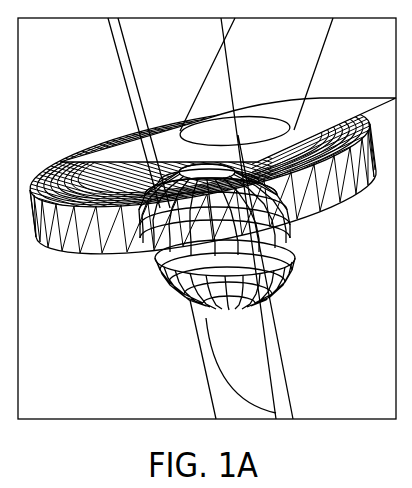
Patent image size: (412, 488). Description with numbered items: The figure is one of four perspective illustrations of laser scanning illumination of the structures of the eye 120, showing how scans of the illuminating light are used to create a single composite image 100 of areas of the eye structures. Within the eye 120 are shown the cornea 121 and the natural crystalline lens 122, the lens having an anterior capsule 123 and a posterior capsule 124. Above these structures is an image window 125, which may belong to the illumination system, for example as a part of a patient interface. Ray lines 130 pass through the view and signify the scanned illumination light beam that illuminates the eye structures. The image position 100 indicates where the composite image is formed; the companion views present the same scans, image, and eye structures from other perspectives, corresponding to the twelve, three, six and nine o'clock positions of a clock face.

The single composite image 100 is at (323, 97).
The eye 120 is at (99, 317).
The cornea 121 is at (289, 231).
The natural crystalline lens 122 is at (276, 283).
The anterior capsule 123 is at (160, 267).
The posterior capsule 124 is at (209, 317).
The image window 125 is at (59, 165).
The ray lines 130 is at (211, 72).